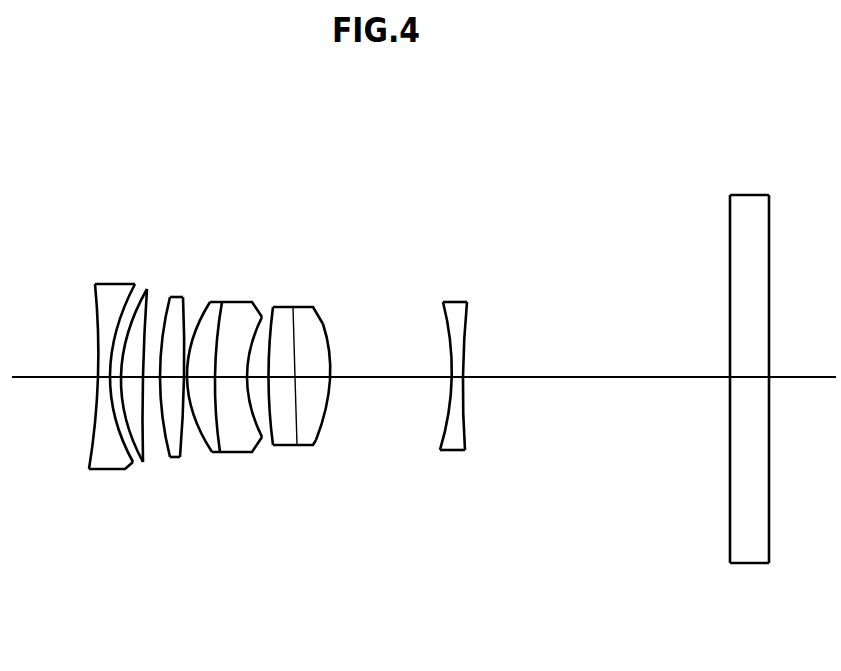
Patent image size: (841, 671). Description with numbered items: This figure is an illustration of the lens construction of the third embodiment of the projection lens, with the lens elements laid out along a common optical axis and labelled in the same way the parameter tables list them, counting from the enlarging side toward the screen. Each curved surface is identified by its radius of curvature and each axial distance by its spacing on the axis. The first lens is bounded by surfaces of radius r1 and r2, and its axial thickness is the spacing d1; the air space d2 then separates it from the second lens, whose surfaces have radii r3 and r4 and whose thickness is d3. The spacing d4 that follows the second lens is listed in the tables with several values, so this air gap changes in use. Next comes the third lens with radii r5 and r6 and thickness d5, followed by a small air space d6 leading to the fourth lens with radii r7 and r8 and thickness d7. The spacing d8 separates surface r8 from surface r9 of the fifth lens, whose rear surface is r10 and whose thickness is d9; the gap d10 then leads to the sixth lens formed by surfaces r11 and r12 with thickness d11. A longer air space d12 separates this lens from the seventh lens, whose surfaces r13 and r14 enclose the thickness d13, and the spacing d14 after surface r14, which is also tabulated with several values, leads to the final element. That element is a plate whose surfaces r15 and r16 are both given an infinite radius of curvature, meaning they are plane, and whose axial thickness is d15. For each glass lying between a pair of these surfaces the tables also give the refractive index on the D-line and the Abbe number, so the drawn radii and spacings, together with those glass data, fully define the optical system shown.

The radius of curvature r1 is at (95, 337).
The radius of curvature r2 is at (132, 327).
The radius of curvature r3 is at (140, 316).
The radius of curvature r4 is at (147, 291).
The radius of curvature r5 is at (170, 300).
The radius of curvature r6 is at (182, 300).
The radius of curvature r7 is at (208, 306).
The radius of curvature r8 is at (222, 303).
The radius of curvature r9 is at (258, 312).
The radius of curvature r10 is at (273, 307).
The radius of curvature r11 is at (293, 307).
The radius of curvature r12 is at (323, 324).
The radius of curvature r13 is at (447, 323).
The radius of curvature r14 is at (468, 315).
The radius of curvature r15 is at (730, 290).
The radius of curvature r16 is at (768, 290).
The spacing on axis d1 is at (104, 377).
The spacing on axis d2 is at (116, 377).
The spacing on axis d3 is at (131, 377).
The spacing on axis d4 is at (151, 377).
The spacing on axis d5 is at (172, 377).
The spacing on axis d6 is at (195, 377).
The spacing on axis d7 is at (200, 377).
The spacing on axis d8 is at (218, 377).
The spacing on axis d9 is at (233, 377).
The spacing on axis d10 is at (257, 377).
The spacing on axis d11 is at (297, 377).
The spacing on axis d12 is at (375, 377).
The spacing on axis d13 is at (457, 378).
The spacing on axis d14 is at (597, 377).
The spacing on axis d15 is at (750, 377).